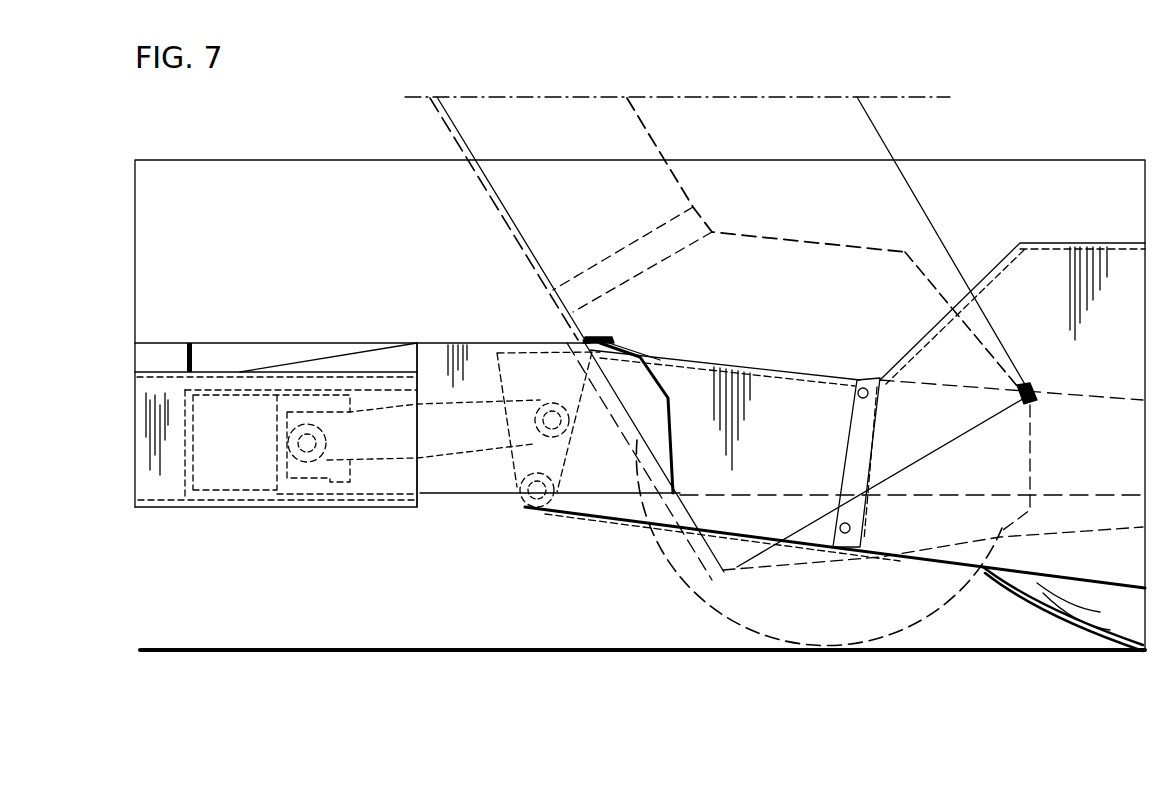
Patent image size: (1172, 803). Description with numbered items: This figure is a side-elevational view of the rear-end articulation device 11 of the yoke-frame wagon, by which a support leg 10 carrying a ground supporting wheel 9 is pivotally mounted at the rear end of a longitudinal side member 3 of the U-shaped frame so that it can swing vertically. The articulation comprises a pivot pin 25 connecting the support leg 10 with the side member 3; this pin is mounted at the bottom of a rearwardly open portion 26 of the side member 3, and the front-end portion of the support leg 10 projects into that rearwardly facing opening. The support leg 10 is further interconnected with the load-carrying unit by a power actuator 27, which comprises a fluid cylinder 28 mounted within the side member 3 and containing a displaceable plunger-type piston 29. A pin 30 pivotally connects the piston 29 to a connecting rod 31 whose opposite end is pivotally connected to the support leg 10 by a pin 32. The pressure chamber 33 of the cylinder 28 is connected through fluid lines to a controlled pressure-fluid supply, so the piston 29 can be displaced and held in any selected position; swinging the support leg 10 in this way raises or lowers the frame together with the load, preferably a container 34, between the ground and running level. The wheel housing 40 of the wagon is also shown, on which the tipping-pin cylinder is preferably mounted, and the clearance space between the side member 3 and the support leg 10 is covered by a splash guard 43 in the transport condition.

The longitudinal side member 3 is at (162, 478).
The ground supporting wheel 9 is at (743, 597).
The support leg 10 is at (697, 513).
The articulation device 11 is at (513, 517).
The pivot pin 25 is at (533, 507).
The rearwardly open portion 26 is at (603, 480).
The power actuator 27 is at (238, 390).
The fluid cylinder 28 is at (208, 393).
The piston 29 is at (272, 470).
The pin 30 is at (303, 477).
The connecting rod 31 is at (441, 445).
The pin 32 is at (548, 410).
The pressure chamber 33 is at (225, 477).
The container 34 is at (396, 161).
The wheel housing 40 is at (942, 550).
The splash guard 43 is at (645, 352).